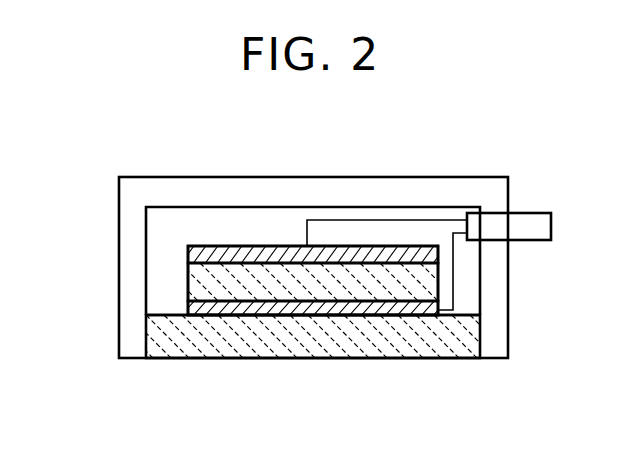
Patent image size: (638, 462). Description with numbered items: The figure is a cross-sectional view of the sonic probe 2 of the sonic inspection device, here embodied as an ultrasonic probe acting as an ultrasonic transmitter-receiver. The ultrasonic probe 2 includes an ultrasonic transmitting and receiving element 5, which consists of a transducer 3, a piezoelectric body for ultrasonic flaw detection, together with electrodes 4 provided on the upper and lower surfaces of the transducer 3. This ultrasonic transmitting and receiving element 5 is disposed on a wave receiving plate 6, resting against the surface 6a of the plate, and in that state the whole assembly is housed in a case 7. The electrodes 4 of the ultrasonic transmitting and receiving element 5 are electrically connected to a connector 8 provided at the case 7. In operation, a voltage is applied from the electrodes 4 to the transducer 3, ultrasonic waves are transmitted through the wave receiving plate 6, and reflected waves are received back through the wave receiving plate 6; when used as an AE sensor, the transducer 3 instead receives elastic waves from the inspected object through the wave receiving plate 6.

The sonic probe 2 is at (453, 155).
The transducer 3 is at (192, 284).
The electrodes 4 is at (192, 254).
The ultrasonic transmitting and receiving element 5 is at (73, 242).
The wave receiving plate 6 is at (170, 341).
The surface of the wave receiving plate 6a is at (370, 318).
The case 7 is at (227, 177).
The connector 8 is at (537, 213).